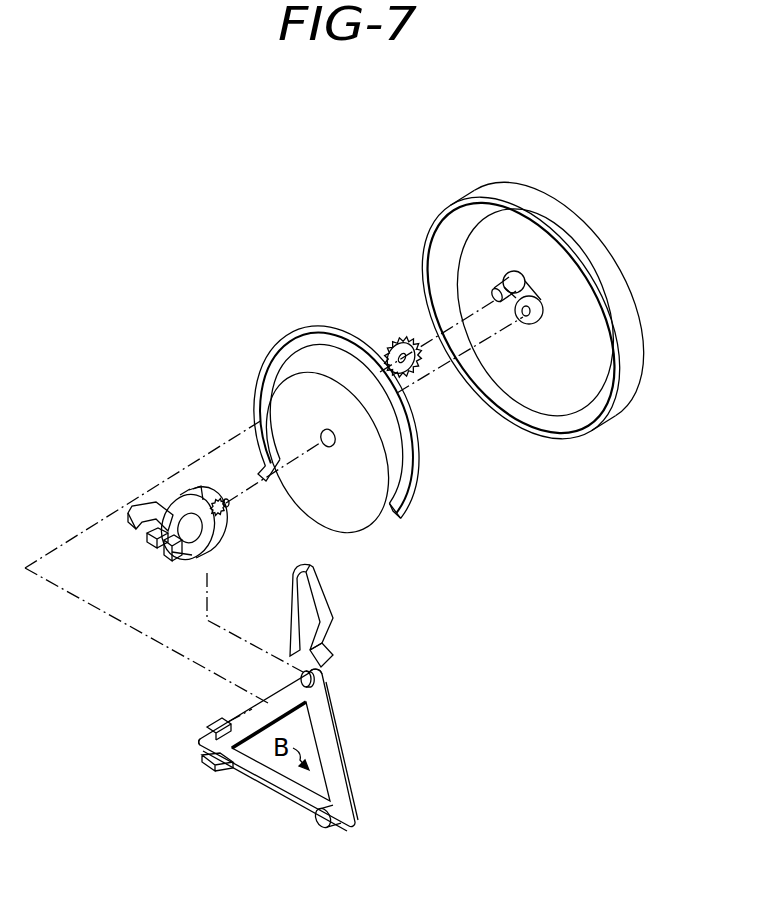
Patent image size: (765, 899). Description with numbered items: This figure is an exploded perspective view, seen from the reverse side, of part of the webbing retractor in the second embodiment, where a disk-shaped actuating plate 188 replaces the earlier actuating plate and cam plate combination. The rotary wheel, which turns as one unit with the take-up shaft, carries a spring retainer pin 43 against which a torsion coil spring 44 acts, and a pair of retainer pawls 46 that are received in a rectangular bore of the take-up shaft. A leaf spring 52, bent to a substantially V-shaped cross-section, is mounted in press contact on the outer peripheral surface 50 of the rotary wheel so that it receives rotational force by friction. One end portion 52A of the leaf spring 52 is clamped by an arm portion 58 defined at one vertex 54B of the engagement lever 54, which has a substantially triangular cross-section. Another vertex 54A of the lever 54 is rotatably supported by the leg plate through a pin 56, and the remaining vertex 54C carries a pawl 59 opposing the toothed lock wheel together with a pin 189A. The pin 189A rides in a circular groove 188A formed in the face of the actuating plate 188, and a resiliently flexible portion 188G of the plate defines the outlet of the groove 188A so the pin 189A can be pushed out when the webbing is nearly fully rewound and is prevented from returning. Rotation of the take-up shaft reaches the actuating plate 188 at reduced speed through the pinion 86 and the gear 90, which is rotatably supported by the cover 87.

The cover 87 is at (596, 423).
The gear 90 is at (402, 335).
The actuating plate 188 is at (362, 423).
The circular groove 188A is at (396, 483).
The resiliently flexible portion 188G is at (400, 515).
The outer peripheral surface 50 is at (176, 500).
The spring retainer pin 43 is at (136, 503).
The retainer pawls 46 is at (152, 550).
The torsion coil spring 44 is at (186, 560).
The pinion 86 is at (228, 513).
The leaf spring 52 is at (344, 615).
The end portion of leaf spring 52A is at (327, 650).
The arm portion 58 is at (300, 678).
The engagement lever 54 is at (276, 745).
The vertex of triangular lever 54A is at (348, 800).
The vertex of triangular lever 54B is at (322, 690).
The vertex of triangular lever 54C is at (205, 738).
The pin 189A is at (220, 720).
The pawl 59 is at (214, 767).
The pin 56 is at (334, 826).